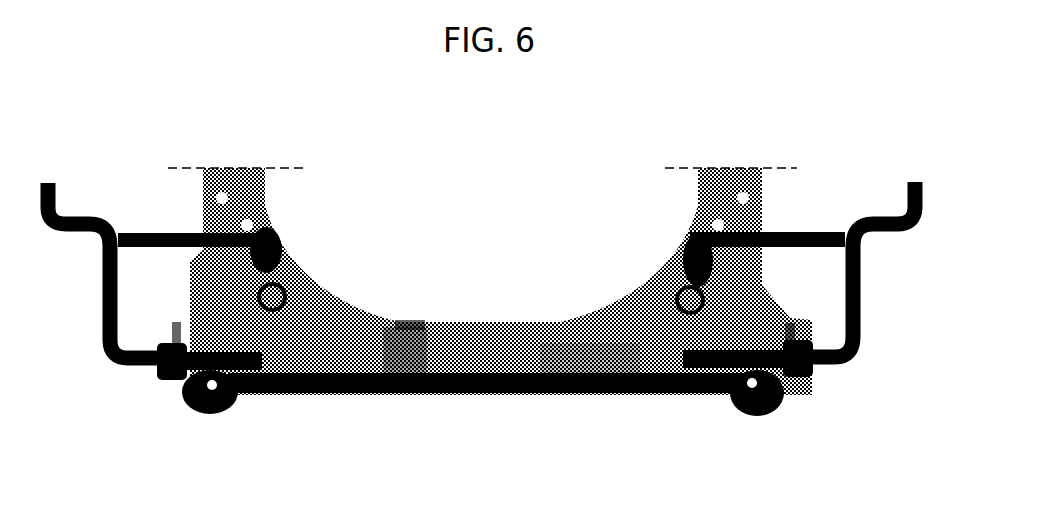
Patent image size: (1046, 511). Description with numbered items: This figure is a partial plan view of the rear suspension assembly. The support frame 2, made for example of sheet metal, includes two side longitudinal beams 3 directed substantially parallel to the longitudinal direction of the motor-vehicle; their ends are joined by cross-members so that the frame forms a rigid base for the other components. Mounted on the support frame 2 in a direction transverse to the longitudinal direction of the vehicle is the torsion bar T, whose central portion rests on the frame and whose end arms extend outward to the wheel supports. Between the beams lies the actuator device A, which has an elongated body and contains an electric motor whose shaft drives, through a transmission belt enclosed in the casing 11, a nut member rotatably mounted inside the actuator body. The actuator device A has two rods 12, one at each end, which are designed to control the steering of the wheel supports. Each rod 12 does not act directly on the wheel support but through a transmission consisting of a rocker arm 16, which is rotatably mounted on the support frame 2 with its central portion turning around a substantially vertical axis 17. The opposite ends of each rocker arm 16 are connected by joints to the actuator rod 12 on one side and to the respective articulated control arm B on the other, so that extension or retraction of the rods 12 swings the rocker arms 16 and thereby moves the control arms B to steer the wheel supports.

The support frame 2 is at (767, 187).
The side longitudinal beams 3 is at (250, 192).
The casing 11 is at (404, 317).
The rods 12 is at (305, 362).
The rocker arm 16 is at (270, 268).
The vertical axis 17 is at (272, 303).
The actuator device A is at (490, 316).
The articulated control arms B is at (147, 232).
The torsion bar T is at (122, 368).